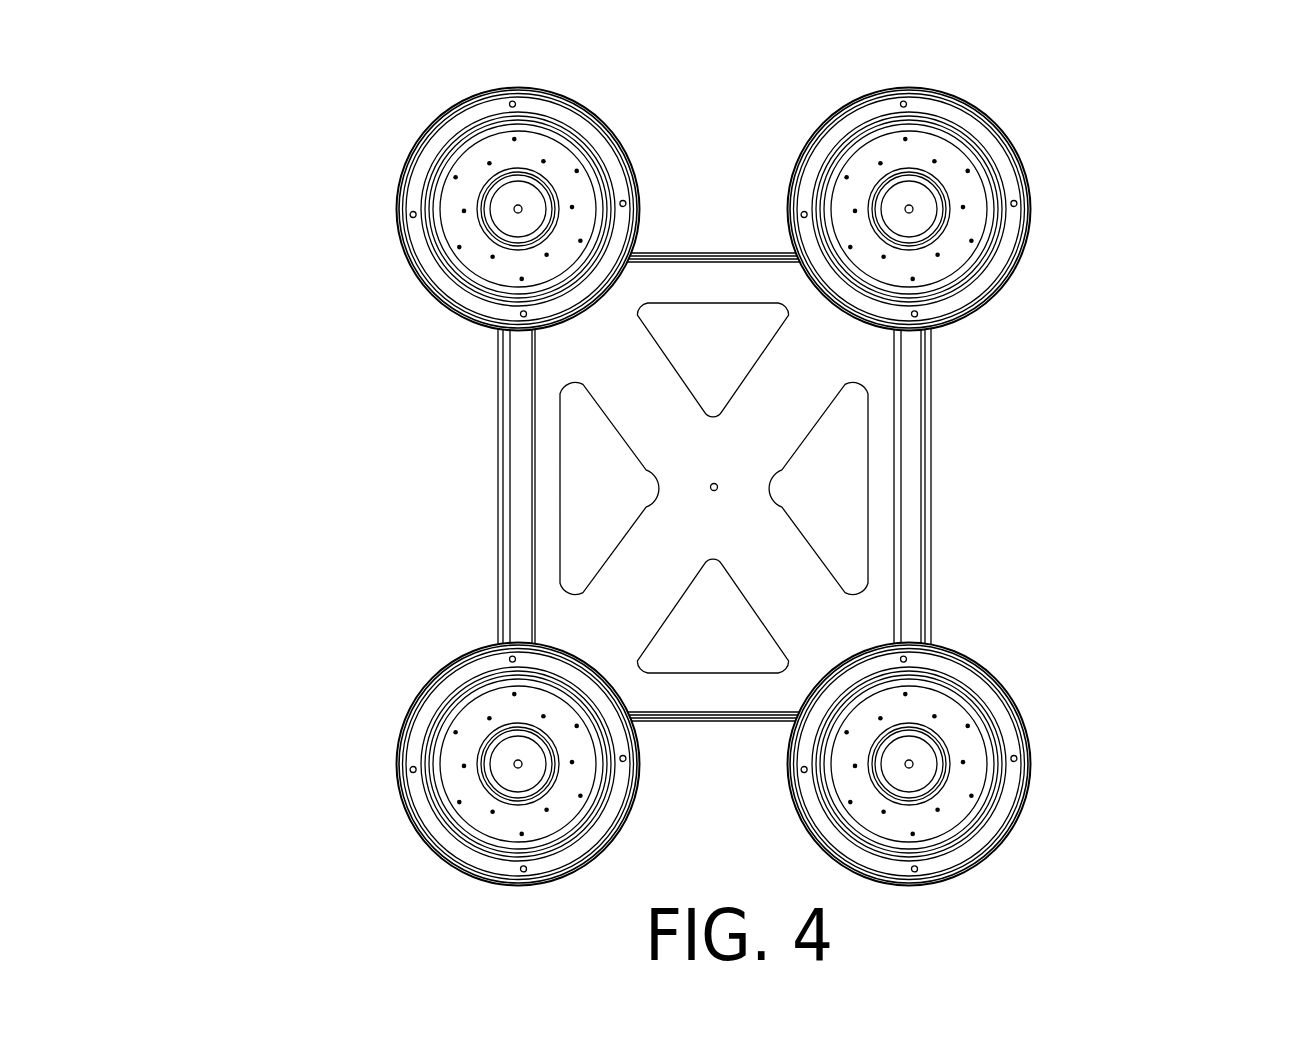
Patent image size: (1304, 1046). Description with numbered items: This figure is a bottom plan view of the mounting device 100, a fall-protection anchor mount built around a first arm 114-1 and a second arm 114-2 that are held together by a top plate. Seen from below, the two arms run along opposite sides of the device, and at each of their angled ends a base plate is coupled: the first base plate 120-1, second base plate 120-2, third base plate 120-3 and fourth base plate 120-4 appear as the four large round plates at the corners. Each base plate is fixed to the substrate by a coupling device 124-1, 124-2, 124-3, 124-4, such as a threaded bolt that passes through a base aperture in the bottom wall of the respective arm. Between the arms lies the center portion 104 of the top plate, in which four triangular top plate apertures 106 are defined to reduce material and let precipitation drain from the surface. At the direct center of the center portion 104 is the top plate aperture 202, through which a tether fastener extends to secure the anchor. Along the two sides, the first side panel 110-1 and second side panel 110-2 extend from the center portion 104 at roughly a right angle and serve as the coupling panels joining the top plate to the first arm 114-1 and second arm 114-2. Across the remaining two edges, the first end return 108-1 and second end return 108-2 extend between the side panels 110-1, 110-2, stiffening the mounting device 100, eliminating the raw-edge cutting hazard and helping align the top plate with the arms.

The mounting device 100 is at (103, 66).
The center portion 104 is at (582, 362).
The top plate apertures 106 is at (745, 350).
The first end return 108-1 is at (708, 722).
The second end return 108-2 is at (708, 252).
The first side panel 110-1 is at (500, 568).
The second side panel 110-2 is at (928, 556).
The first arm 114-1 is at (517, 528).
The second arm 114-2 is at (910, 611).
The first base plate 120-1 is at (473, 160).
The second base plate 120-2 is at (473, 814).
The third base plate 120-3 is at (954, 814).
The fourth base plate 120-4 is at (954, 160).
The first coupling device 124-1 is at (518, 209).
The second coupling device 124-2 is at (518, 764).
The third coupling device 124-3 is at (909, 764).
The fourth coupling device 124-4 is at (909, 209).
The top plate aperture 202 is at (730, 478).